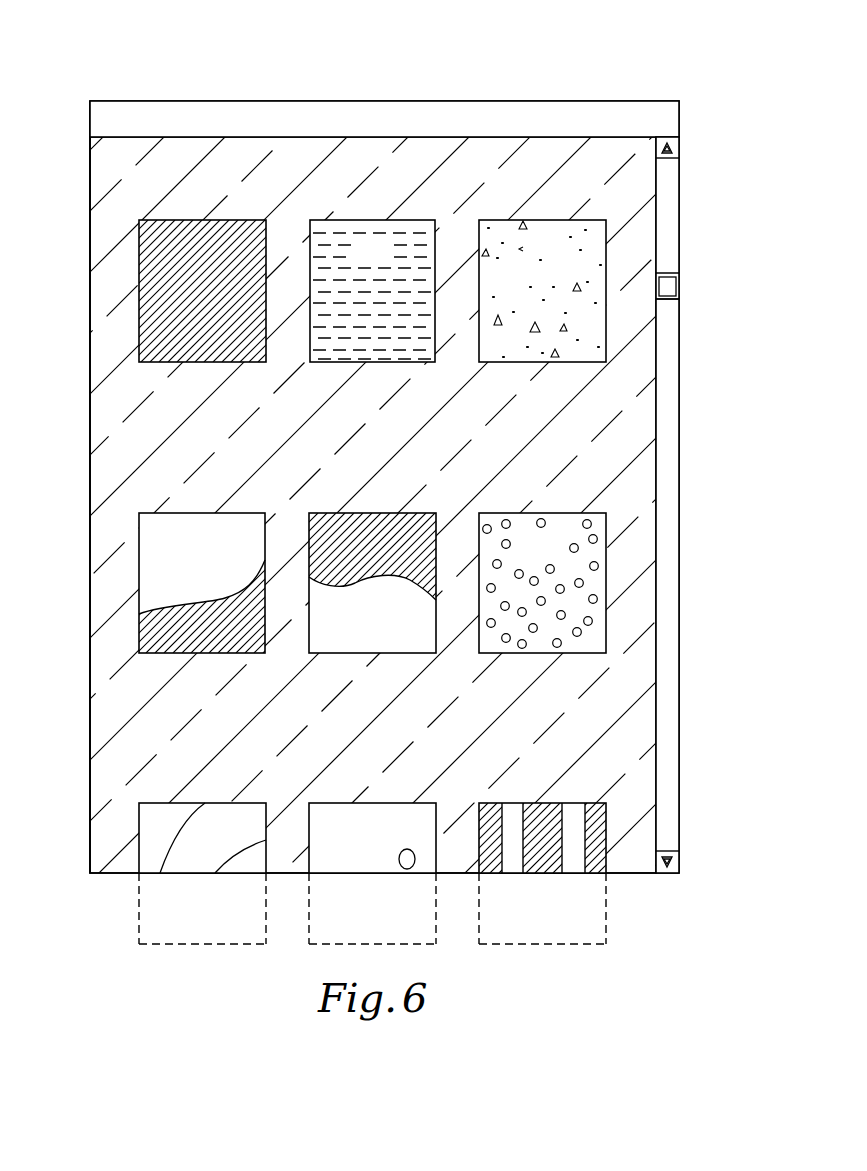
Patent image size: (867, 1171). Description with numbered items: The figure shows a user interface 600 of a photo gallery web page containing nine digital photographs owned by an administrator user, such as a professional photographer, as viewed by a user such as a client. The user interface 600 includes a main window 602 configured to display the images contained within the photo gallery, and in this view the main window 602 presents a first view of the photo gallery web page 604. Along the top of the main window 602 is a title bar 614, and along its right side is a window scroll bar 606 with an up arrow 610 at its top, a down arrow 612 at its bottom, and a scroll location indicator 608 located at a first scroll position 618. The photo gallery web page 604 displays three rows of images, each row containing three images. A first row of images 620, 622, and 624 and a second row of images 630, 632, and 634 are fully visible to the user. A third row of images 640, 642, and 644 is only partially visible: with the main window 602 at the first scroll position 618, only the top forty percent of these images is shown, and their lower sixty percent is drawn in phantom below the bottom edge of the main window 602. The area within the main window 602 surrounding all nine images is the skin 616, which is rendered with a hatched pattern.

The user interface 600 is at (118, 31).
The main window 602 is at (89, 471).
The photo gallery web page 604 is at (89, 313).
The window scroll bar 606 is at (668, 210).
The scroll location indicator 608 is at (668, 284).
The up arrow 610 is at (672, 148).
The down arrow 612 is at (672, 858).
The title bar 614 is at (637, 108).
The skin 616 is at (118, 613).
The first scroll position 618 is at (668, 300).
The image 620 is at (187, 262).
The image 622 is at (357, 262).
The image 624 is at (527, 262).
The image 630 is at (187, 555).
The image 632 is at (357, 555).
The image 634 is at (527, 555).
The image 640 is at (187, 845).
The image 642 is at (357, 845).
The image 644 is at (527, 846).